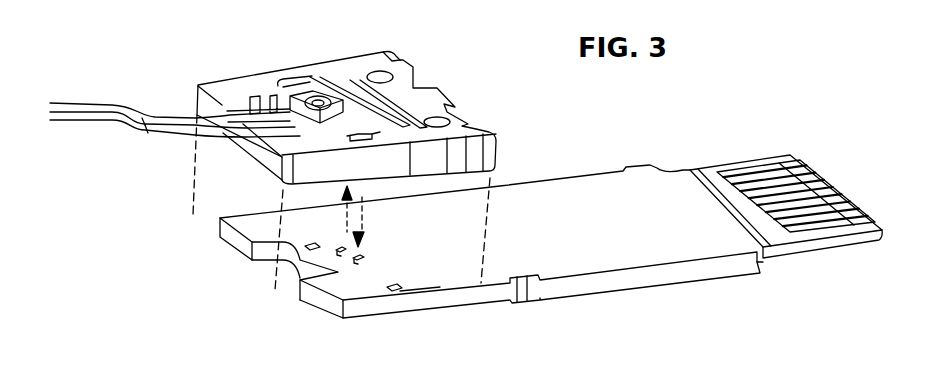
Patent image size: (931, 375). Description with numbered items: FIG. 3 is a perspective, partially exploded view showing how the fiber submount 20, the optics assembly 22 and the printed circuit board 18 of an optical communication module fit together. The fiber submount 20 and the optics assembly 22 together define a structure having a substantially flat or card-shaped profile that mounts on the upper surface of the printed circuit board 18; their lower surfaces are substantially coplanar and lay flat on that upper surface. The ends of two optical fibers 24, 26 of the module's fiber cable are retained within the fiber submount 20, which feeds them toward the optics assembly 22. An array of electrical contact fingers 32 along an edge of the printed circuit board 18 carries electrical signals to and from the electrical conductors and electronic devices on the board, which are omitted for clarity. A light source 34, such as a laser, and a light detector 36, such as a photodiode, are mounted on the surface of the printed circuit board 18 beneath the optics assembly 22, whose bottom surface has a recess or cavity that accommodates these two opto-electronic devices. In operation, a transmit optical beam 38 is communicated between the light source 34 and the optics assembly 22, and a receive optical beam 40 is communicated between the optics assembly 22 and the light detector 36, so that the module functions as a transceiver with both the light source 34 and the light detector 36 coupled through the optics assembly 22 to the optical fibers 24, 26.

The printed circuit board 18 is at (594, 187).
The fiber submount 20 is at (255, 85).
The optics assembly 22 is at (437, 90).
The optical fiber 24 is at (110, 104).
The optical fiber 26 is at (120, 127).
The electrical contact fingers 32 is at (752, 170).
The light source 34 is at (340, 252).
The light detector 36 is at (357, 260).
The transmit optical beam 38 is at (345, 228).
The receive optical beam 40 is at (362, 223).